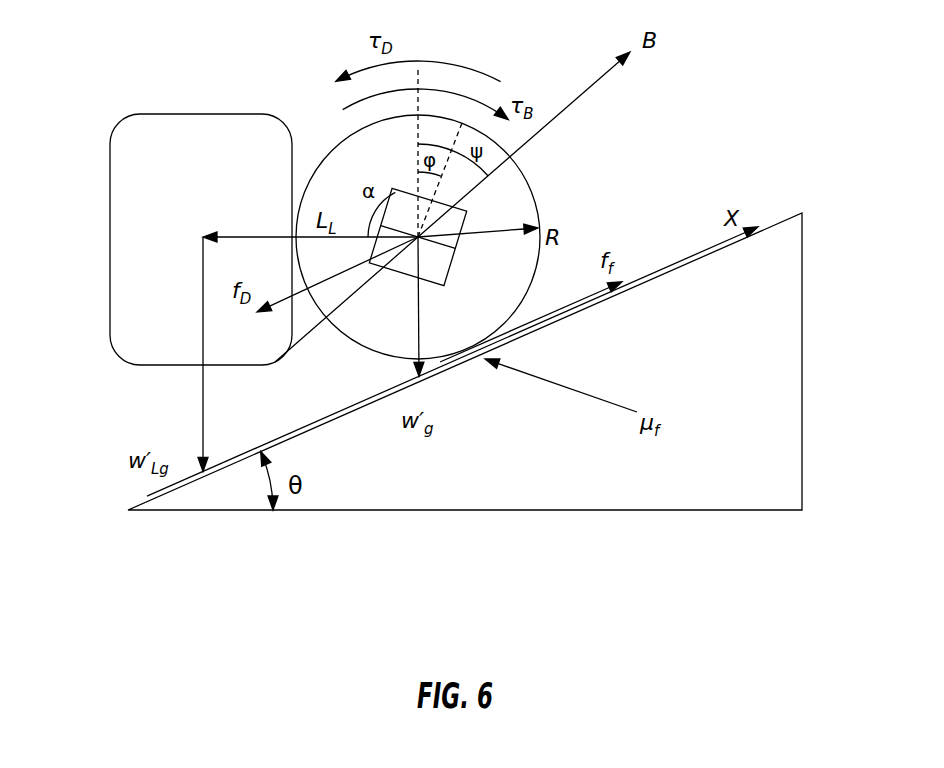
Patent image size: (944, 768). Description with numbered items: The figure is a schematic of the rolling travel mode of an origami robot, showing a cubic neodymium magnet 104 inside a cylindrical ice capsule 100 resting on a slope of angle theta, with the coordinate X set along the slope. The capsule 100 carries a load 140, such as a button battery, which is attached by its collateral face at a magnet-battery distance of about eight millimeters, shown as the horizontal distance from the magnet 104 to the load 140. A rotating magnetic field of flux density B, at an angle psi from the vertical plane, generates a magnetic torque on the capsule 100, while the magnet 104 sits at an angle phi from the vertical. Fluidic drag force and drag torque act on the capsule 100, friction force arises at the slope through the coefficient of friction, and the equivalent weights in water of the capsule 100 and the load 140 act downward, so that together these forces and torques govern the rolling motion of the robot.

The cylindrical structure (ice capsule) 100 is at (312, 104).
The magnet 104 is at (490, 226).
The load 140 is at (145, 202).